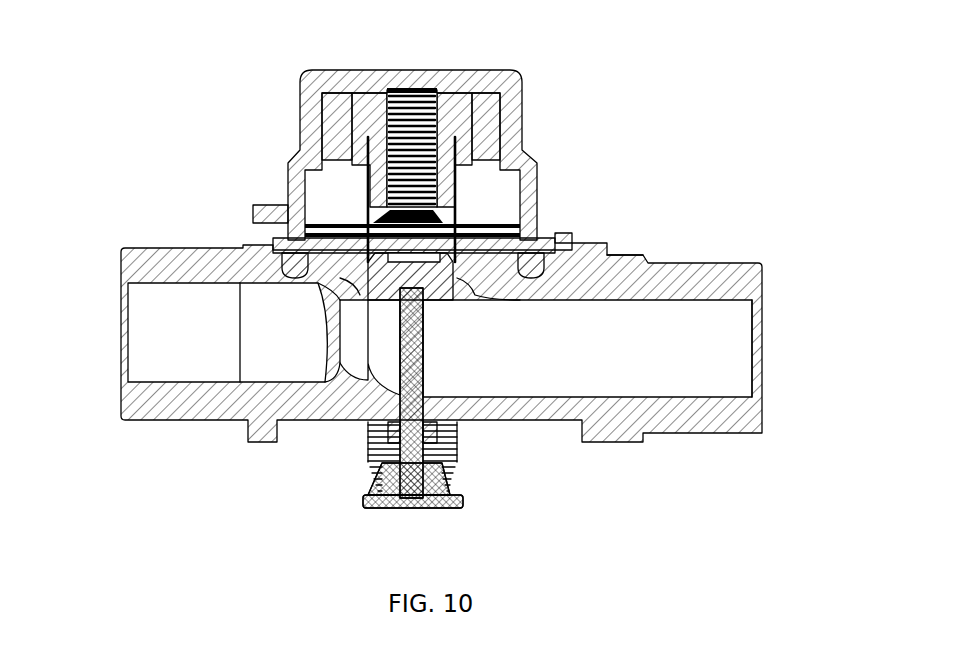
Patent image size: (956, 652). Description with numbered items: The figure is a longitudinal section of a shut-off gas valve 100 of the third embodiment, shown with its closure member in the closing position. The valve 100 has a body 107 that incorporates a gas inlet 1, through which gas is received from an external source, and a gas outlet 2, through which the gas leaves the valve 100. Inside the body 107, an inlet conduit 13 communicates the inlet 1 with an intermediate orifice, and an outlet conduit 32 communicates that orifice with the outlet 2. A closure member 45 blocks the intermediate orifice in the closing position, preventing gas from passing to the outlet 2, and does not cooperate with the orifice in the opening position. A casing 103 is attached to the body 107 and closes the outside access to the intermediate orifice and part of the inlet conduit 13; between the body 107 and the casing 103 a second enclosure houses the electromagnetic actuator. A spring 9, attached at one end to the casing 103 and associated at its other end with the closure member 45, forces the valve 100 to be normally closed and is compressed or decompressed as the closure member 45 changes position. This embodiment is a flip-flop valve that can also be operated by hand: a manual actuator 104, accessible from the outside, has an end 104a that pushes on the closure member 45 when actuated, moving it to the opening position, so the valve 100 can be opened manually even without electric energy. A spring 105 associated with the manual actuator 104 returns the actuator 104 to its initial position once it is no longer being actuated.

The shut-off gas valve 100 is at (437, 295).
The gas inlet 1 is at (118, 336).
The gas outlet 2 is at (766, 350).
The inlet conduit 13 is at (173, 303).
The outlet conduit 32 is at (685, 333).
The body 107 is at (640, 280).
The casing 103 is at (320, 112).
The spring 9 is at (487, 103).
The closure member 45 is at (497, 223).
The end of the manual actuator 104a is at (437, 308).
The manual actuator 104 is at (433, 487).
The spring 105 is at (368, 455).